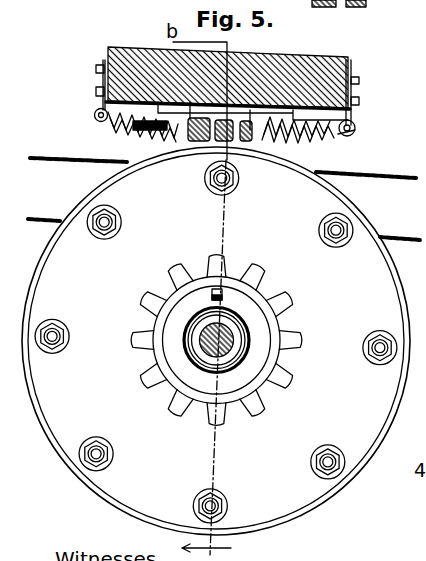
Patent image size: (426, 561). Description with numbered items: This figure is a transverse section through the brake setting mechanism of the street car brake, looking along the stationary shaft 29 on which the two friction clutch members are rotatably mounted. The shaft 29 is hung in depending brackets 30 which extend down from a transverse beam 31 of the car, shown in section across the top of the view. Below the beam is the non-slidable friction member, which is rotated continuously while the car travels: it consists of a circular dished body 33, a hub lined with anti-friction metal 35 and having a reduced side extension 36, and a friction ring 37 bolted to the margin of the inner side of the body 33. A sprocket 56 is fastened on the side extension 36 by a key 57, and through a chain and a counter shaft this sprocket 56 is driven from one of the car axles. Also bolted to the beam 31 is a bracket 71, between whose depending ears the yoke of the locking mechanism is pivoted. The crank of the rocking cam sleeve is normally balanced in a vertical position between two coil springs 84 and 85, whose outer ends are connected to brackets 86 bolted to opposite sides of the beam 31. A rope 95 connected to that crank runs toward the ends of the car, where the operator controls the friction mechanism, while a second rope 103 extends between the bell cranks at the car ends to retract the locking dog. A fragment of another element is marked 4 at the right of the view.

The stationary shaft 29 is at (230, 347).
The depending brackets 30 is at (310, 143).
The transverse beam 31 is at (338, 60).
The circular dished body 33 is at (246, 340).
The anti-friction metal 35 is at (234, 323).
The reduced side extension 36 is at (246, 332).
The friction ring 37 is at (55, 452).
The sprocket 56 is at (216, 340).
The key 57 is at (219, 293).
The bracket 71 is at (143, 130).
The coil spring 84 is at (120, 123).
The coil spring 85 is at (338, 134).
The brackets 86 is at (100, 100).
The rope 95 is at (57, 163).
The rope 103 is at (45, 220).
The frame 4 is at (420, 470).